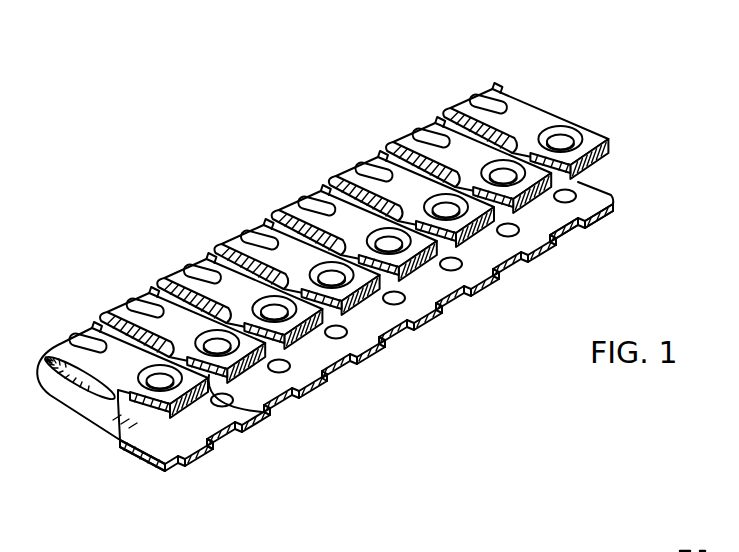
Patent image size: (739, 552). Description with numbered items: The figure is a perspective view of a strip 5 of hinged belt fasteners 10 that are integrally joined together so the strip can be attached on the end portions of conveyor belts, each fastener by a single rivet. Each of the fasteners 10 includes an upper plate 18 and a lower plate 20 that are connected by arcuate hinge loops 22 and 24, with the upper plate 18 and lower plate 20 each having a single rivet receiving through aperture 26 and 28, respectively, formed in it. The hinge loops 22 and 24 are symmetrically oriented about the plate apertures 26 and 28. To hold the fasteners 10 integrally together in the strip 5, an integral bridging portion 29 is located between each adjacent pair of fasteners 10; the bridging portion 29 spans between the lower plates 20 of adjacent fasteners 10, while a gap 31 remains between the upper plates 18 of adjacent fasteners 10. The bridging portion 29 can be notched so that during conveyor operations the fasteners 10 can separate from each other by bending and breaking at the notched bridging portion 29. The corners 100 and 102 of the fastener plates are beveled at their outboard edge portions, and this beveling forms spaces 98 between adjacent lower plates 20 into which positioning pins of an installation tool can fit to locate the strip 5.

The strip 5 is at (564, 67).
The hinged belt fastener 10 is at (95, 425).
The upper plate 18 is at (592, 133).
The lower plate 20 is at (604, 189).
The arcuate hinge loop 22 is at (452, 108).
The arcuate hinge loop 24 is at (495, 90).
The rivet receiving through aperture 26 is at (150, 372).
The rivet receiving through aperture 28 is at (151, 447).
The bridging portion 29 is at (215, 442).
The gap 31 is at (265, 412).
The space 98 is at (340, 372).
The beveled corner 100 is at (580, 236).
The beveled corner 102 is at (617, 208).